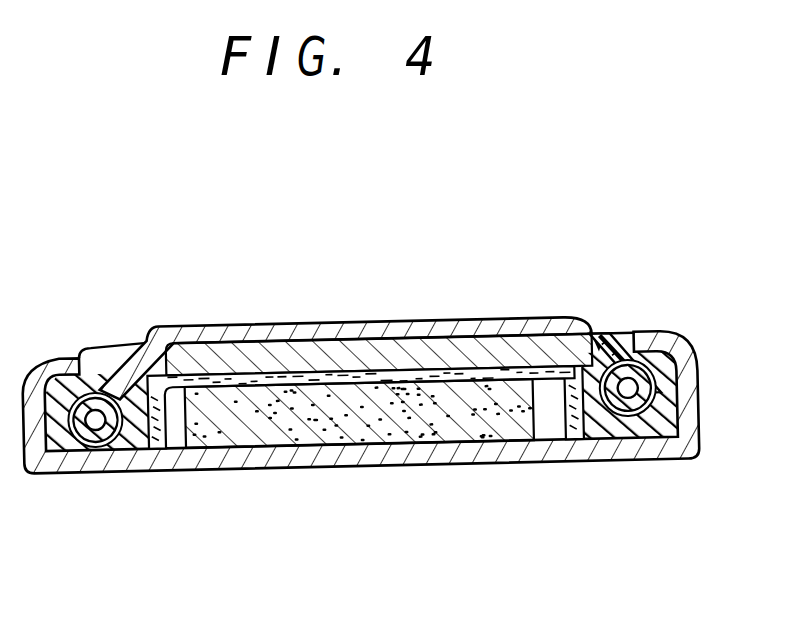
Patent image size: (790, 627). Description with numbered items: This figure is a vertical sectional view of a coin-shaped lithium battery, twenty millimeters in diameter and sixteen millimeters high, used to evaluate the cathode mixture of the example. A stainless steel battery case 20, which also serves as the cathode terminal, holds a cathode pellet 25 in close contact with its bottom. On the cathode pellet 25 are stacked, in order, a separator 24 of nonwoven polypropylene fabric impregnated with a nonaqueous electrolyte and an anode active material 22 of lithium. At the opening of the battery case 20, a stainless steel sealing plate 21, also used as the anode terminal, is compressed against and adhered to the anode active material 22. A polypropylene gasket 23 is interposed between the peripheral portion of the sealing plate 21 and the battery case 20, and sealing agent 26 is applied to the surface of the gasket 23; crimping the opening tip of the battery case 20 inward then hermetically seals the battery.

The battery case 20 is at (247, 466).
The sealing plate 21 is at (199, 330).
The anode active material 22 is at (262, 342).
The gasket 23 is at (615, 336).
The separator 24 is at (341, 372).
The cathode pellet 25 is at (417, 393).
The sealing agent 26 is at (690, 386).